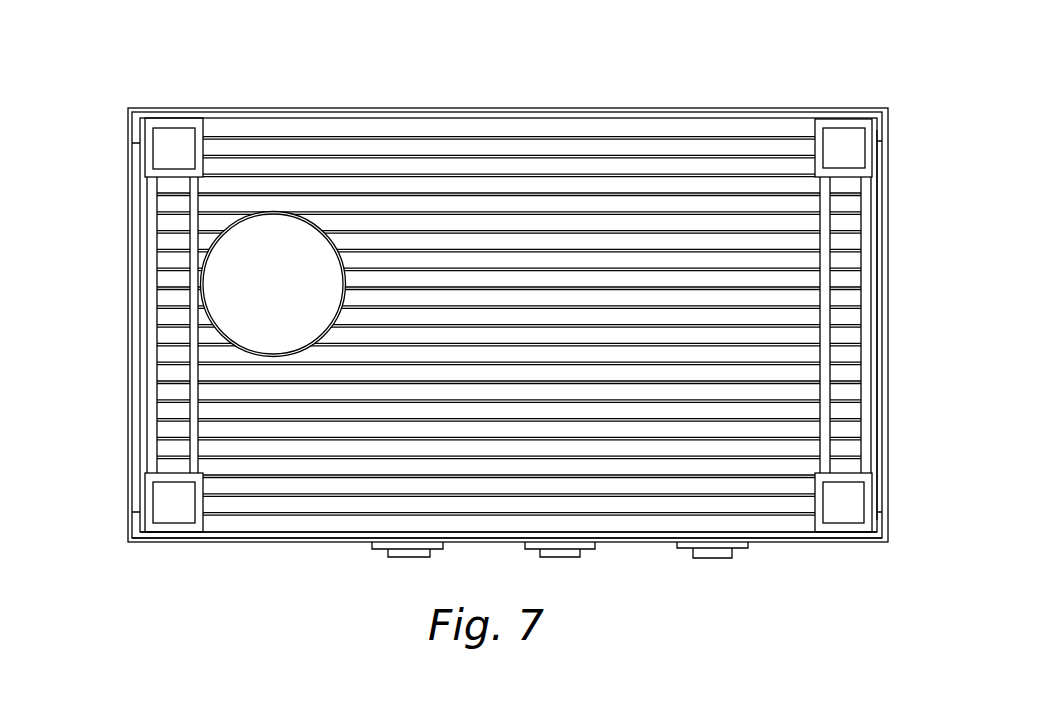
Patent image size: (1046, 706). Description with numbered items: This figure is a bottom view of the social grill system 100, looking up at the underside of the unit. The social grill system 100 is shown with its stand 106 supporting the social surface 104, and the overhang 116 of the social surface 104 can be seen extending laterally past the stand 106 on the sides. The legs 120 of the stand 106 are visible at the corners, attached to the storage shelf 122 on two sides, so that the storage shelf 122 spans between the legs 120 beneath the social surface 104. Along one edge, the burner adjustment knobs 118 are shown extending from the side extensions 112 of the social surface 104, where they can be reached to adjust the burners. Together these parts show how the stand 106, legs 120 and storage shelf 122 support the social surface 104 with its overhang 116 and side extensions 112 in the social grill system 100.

The social grill system 100 is at (502, 305).
The social surface 104 is at (893, 240).
The stand 106 is at (106, 298).
The side extensions 112 is at (840, 543).
The overhang 116 is at (885, 317).
The burner adjustment knobs 118 is at (712, 559).
The legs 120 is at (843, 140).
The storage shelf 122 is at (712, 203).